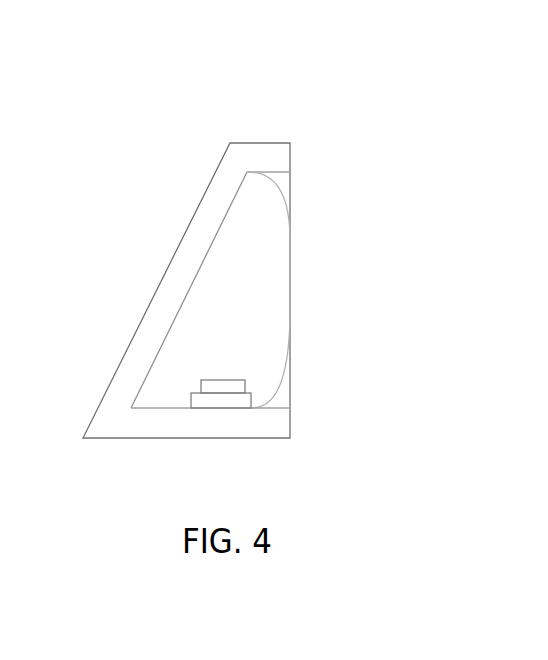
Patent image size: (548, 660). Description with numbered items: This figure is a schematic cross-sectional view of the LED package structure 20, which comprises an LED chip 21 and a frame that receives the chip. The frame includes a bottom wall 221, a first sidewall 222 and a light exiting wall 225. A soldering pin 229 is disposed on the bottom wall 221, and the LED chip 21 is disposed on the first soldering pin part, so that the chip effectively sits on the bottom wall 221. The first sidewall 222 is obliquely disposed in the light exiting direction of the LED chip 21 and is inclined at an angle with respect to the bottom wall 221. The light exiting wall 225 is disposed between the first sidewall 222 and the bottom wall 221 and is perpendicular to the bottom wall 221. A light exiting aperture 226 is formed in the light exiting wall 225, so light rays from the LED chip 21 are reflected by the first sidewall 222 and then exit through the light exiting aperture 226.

The LED package structure 20 is at (267, 40).
The LED chip 21 is at (218, 378).
The bottom wall 221 is at (212, 423).
The first sidewall 222 is at (185, 255).
The light exiting wall 225 is at (290, 193).
The light exiting aperture 226 is at (290, 287).
The soldering pin 229 is at (207, 399).